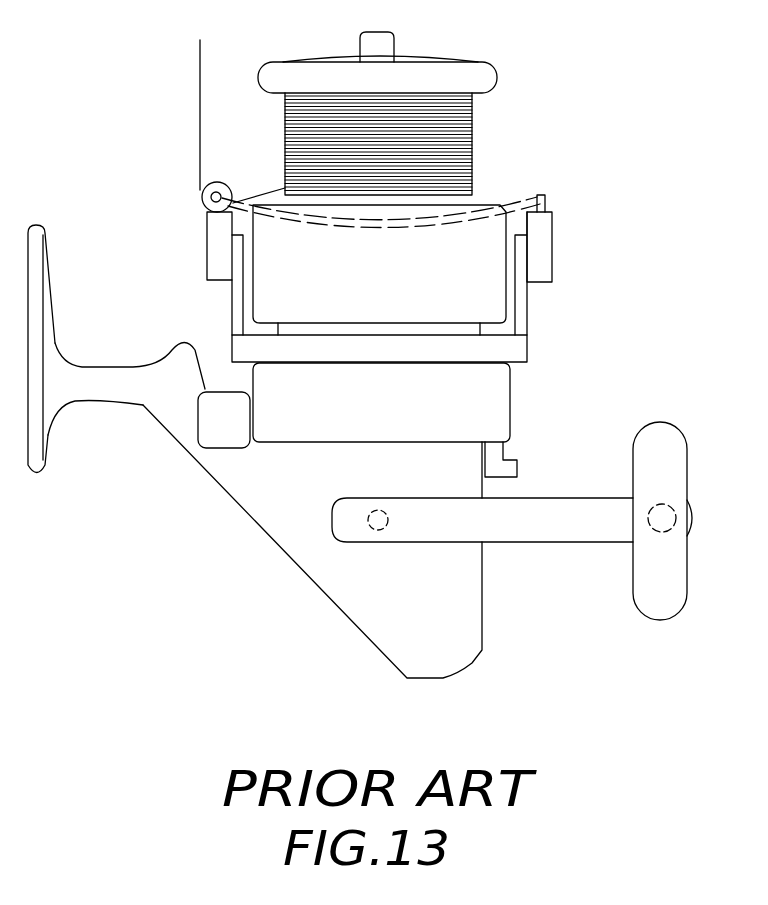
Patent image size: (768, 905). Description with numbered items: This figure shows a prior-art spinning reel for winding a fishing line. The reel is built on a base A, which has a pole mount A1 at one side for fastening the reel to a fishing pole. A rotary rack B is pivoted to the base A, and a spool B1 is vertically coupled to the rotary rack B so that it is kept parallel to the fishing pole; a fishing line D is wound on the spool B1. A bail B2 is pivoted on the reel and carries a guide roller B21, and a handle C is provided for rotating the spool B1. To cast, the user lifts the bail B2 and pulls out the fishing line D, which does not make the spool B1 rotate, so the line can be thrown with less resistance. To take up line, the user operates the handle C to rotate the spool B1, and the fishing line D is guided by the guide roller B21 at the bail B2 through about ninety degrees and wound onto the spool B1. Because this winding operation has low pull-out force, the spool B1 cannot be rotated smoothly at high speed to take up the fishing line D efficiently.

The base A is at (502, 413).
The pole mount A1 is at (110, 393).
The rotary rack B is at (237, 300).
The spool B1 is at (487, 78).
The bail B2 is at (517, 212).
The guide roller B21 is at (210, 202).
The handle C is at (680, 580).
The fishing line D is at (200, 52).